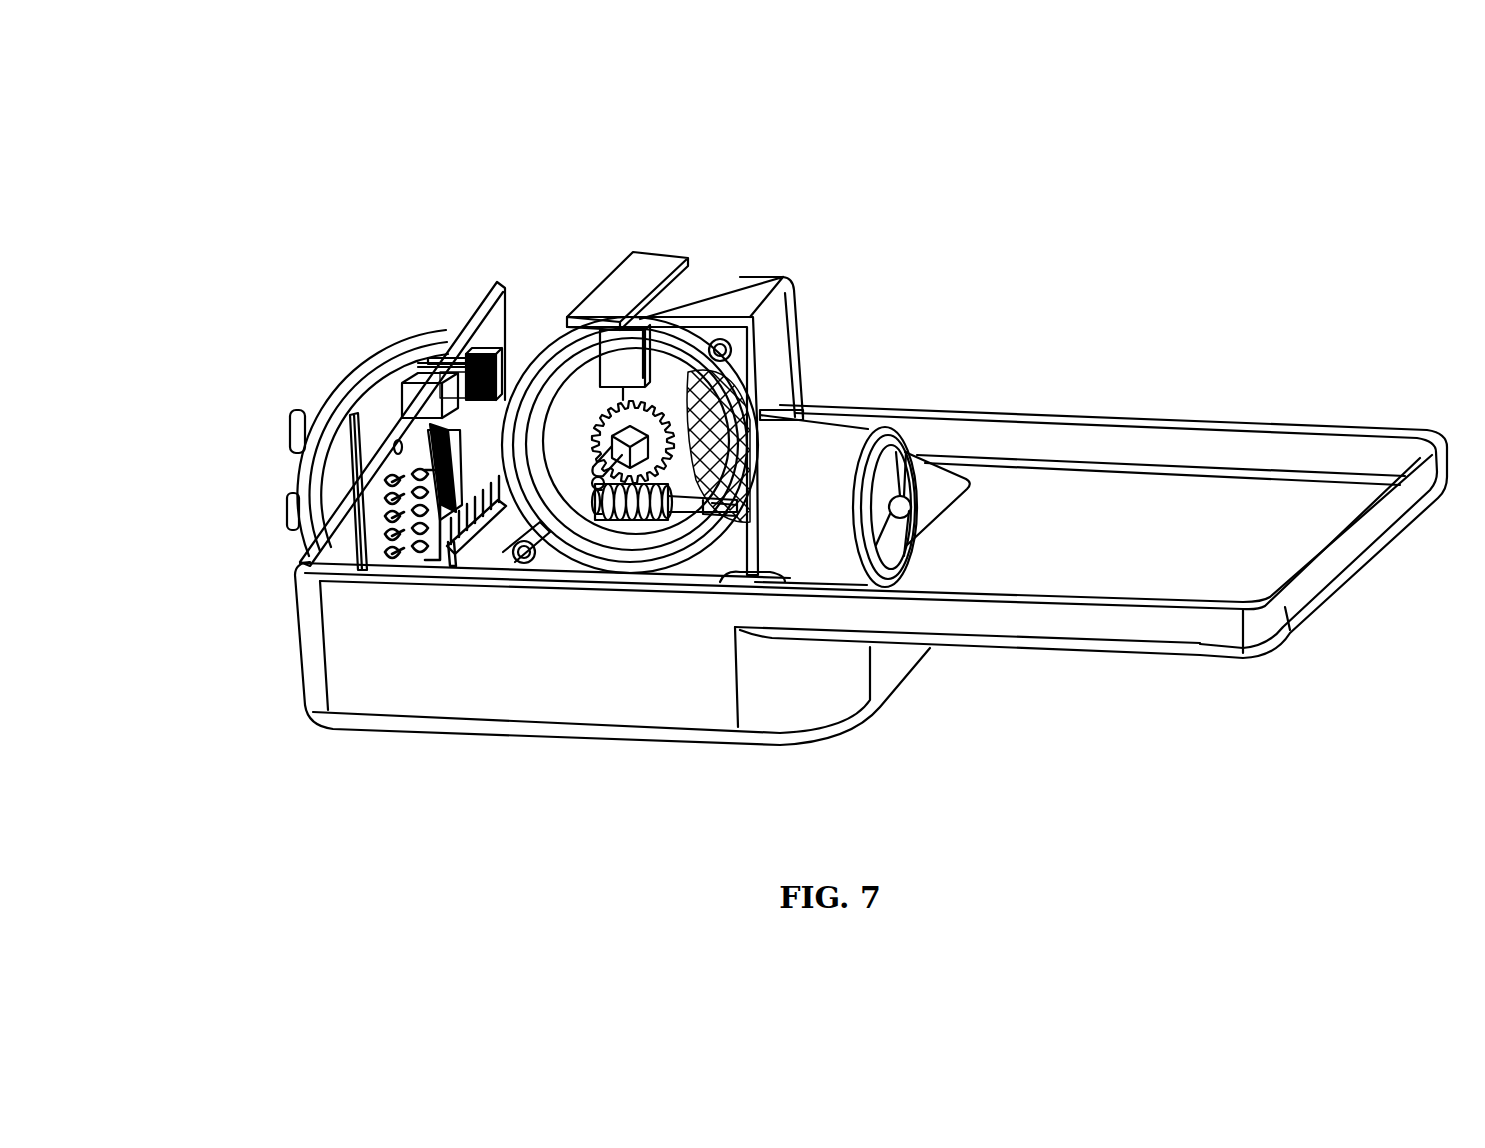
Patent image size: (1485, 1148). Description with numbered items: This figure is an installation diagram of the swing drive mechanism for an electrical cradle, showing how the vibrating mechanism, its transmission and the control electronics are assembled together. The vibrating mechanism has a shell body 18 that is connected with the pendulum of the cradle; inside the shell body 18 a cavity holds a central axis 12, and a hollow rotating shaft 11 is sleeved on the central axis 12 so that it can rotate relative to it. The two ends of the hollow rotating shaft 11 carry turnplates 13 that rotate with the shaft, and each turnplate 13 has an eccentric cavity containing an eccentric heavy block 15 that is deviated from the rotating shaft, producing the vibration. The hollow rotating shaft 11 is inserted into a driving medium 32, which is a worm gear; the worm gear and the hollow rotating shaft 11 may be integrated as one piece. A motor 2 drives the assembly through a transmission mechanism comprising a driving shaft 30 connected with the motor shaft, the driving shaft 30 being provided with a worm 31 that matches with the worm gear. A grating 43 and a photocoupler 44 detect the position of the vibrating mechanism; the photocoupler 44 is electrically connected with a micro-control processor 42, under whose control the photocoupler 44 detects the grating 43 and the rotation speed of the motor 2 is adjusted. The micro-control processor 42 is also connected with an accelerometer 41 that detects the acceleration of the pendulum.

The motor 2 is at (803, 472).
The hollow rotating shaft 11 is at (617, 505).
The central axis 12 is at (597, 485).
The turnplate 13 is at (655, 388).
The eccentric heavy block 15 is at (855, 425).
The shell body 18 is at (540, 358).
The driving shaft 30 is at (703, 508).
The worm 31 is at (632, 515).
The driving medium 32 is at (750, 410).
The accelerometer 41 is at (482, 358).
The micro-control processor 42 is at (437, 448).
The grating 43 is at (525, 500).
The photocoupler 44 is at (612, 355).